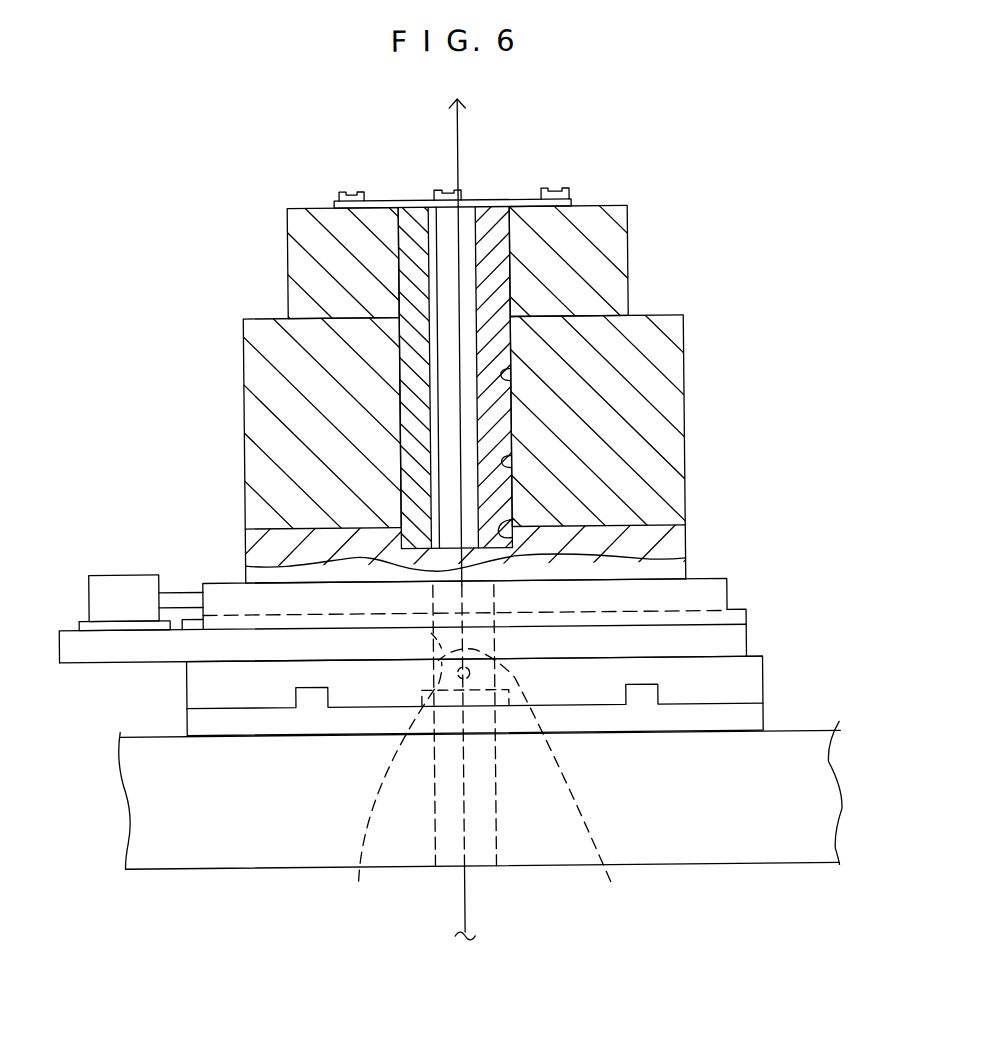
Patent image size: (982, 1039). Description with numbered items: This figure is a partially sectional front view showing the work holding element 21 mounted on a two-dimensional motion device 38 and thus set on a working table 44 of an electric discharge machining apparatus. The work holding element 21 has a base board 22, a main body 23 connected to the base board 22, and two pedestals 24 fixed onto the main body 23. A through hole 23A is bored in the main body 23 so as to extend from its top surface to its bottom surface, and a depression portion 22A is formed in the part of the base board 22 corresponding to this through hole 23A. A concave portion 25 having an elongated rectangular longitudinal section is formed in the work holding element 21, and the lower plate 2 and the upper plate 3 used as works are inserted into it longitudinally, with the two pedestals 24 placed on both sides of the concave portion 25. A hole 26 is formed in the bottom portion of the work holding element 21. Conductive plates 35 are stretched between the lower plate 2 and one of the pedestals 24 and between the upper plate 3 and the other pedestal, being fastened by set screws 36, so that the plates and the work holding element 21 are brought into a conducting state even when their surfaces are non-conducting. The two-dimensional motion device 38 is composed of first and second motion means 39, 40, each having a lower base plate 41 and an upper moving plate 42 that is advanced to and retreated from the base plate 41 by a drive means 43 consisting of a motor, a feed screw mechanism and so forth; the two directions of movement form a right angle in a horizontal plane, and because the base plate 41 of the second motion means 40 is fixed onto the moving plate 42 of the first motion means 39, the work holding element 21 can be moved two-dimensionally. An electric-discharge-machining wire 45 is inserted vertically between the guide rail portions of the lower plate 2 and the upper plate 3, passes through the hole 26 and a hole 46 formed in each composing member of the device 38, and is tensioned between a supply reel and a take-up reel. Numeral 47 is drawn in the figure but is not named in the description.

The lower plate 2 is at (497, 220).
The upper plate 3 is at (417, 220).
The work holding element 21 is at (445, 394).
The base board 22 is at (246, 539).
The depression portion 22A is at (512, 527).
The main body 23 is at (259, 432).
The through hole 23A is at (512, 381).
The pedestals 24 is at (302, 241).
The concave portion 25 is at (512, 462).
The hole 26 is at (478, 556).
The conductive plates 35 is at (389, 199).
The set screws 36 is at (566, 190).
The two-dimensional motion device 38 is at (753, 676).
The first motion means 39 is at (752, 720).
The second motion means 40 is at (737, 637).
The base plate 41 is at (68, 632).
The moving plate 42 is at (212, 585).
The drive means 43 is at (112, 575).
The working table 44 is at (215, 850).
The electric-discharge-machining wire 45 is at (464, 122).
The hole 46 is at (388, 790).
The bolt 47 is at (493, 827).